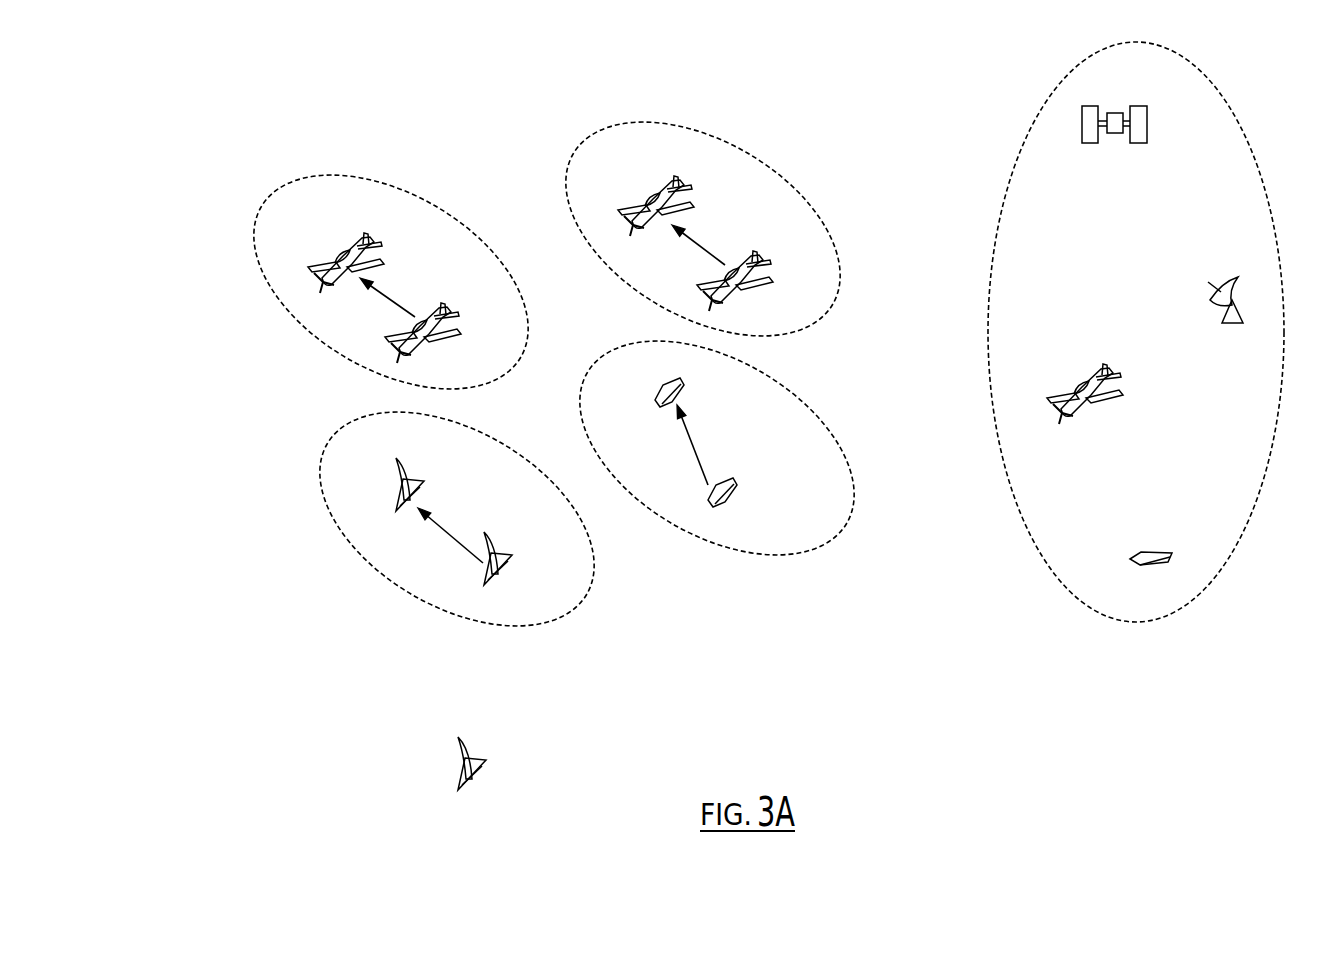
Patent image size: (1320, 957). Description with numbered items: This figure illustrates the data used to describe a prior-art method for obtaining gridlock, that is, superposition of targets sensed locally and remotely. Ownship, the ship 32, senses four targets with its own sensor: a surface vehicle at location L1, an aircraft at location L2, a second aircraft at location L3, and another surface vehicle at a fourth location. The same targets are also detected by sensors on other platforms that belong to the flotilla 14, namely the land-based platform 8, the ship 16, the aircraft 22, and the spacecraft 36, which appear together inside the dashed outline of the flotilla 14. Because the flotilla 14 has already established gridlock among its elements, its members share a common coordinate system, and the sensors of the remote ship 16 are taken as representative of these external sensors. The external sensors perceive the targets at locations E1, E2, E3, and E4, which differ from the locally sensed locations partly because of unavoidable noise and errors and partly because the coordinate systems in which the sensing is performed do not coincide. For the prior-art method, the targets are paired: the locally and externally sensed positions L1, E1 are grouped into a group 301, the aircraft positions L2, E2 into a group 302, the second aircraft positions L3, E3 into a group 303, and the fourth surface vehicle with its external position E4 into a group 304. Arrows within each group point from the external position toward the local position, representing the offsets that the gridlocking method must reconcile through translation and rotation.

The group 301 is at (425, 602).
The group 302 is at (370, 373).
The group 303 is at (637, 293).
The group 304 is at (702, 542).
The locally sensed location of first target L1 is at (402, 478).
The externally sensed location of first target E1 is at (510, 575).
The locally sensed location of second target L2 is at (340, 257).
The externally sensed location of second target E2 is at (457, 333).
The locally sensed location of third target L3 is at (653, 202).
The externally sensed location of third target E3 is at (768, 281).
The externally sensed location of fourth target E4 is at (736, 492).
The flotilla 14 is at (1082, 602).
The spacecraft 36 is at (1115, 135).
The land-based platform 8 is at (1238, 278).
The aircraft 22 is at (1102, 407).
The ship 16 is at (1151, 552).
The ship 32 is at (472, 789).